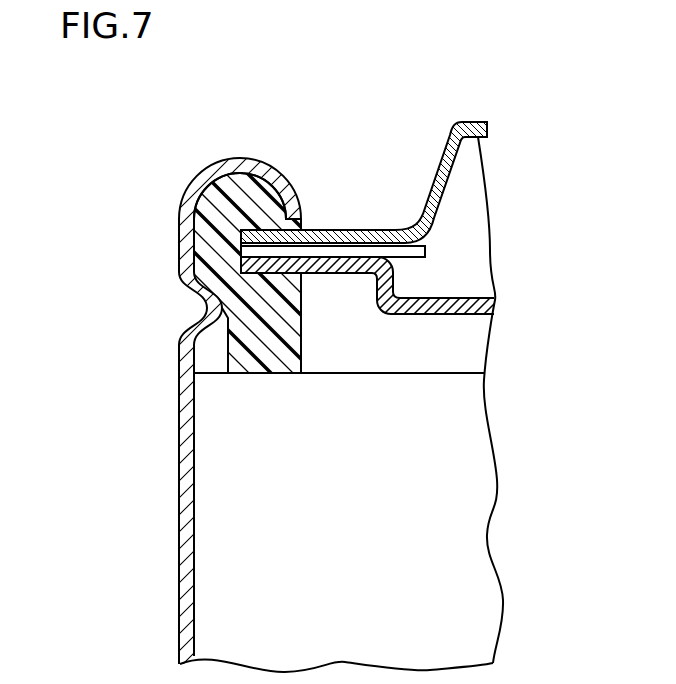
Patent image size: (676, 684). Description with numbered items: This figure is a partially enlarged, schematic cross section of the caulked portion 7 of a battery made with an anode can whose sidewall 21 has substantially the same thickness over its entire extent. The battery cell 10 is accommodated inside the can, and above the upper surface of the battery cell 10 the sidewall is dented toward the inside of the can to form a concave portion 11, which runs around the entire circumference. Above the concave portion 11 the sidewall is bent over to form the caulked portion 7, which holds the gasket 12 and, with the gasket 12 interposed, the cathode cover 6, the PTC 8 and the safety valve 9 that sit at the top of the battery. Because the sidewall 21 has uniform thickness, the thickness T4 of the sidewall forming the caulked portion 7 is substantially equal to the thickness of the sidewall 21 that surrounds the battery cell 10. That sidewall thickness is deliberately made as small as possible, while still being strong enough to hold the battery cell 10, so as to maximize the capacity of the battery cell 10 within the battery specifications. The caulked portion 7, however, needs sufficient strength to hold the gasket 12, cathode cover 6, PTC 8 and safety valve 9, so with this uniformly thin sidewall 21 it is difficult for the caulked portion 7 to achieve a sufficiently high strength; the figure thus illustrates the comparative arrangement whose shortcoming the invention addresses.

The cathode cover 6 is at (470, 121).
The caulked portion 7 is at (278, 130).
The PTC 8 is at (425, 250).
The safety valve 9 is at (494, 306).
The battery cell 10 is at (450, 535).
The concave portion 11 is at (207, 310).
The gasket 12 is at (240, 190).
The sidewall 21 is at (189, 531).
The thickness of the sidewall forming the caulked portion T4 is at (206, 225).